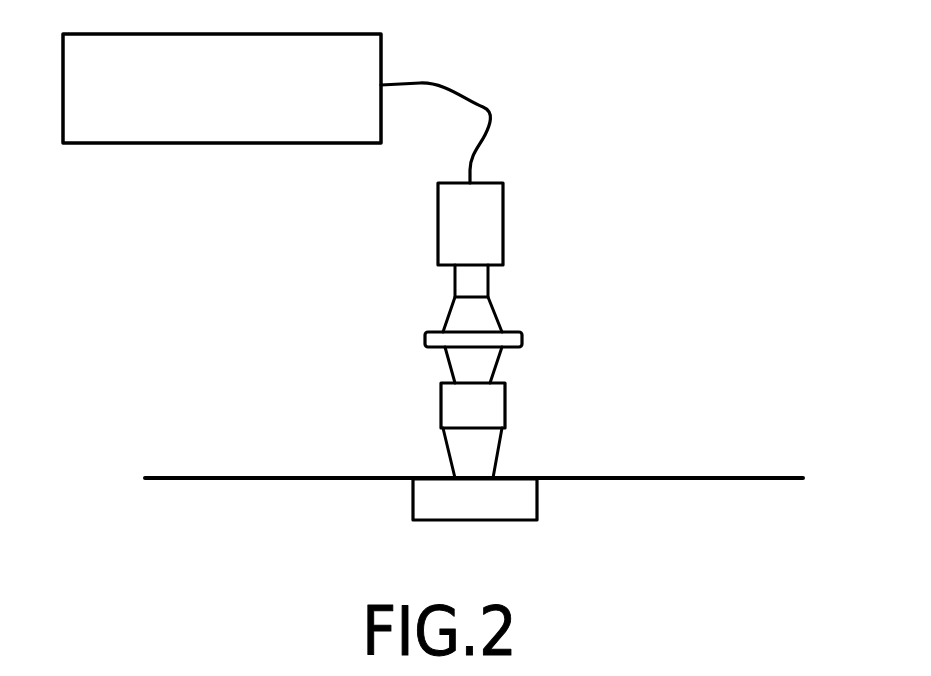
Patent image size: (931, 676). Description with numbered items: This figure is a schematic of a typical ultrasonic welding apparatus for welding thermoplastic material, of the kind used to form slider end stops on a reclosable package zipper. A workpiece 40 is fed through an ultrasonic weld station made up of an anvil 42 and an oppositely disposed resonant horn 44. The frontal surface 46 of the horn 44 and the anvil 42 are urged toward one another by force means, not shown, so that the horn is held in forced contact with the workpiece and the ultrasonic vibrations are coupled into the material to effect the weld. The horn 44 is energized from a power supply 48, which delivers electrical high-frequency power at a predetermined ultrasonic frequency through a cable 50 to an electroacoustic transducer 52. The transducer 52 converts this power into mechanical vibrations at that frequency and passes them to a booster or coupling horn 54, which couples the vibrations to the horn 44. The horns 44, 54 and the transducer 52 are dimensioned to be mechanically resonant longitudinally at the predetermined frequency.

The workpiece 40 is at (219, 480).
The anvil 42 is at (537, 502).
The resonant horn 44 is at (441, 408).
The frontal surface 46 is at (468, 478).
The power supply 48 is at (381, 58).
The cable 50 is at (480, 105).
The electroacoustic transducer 52 is at (438, 232).
The booster horn 54 is at (425, 340).